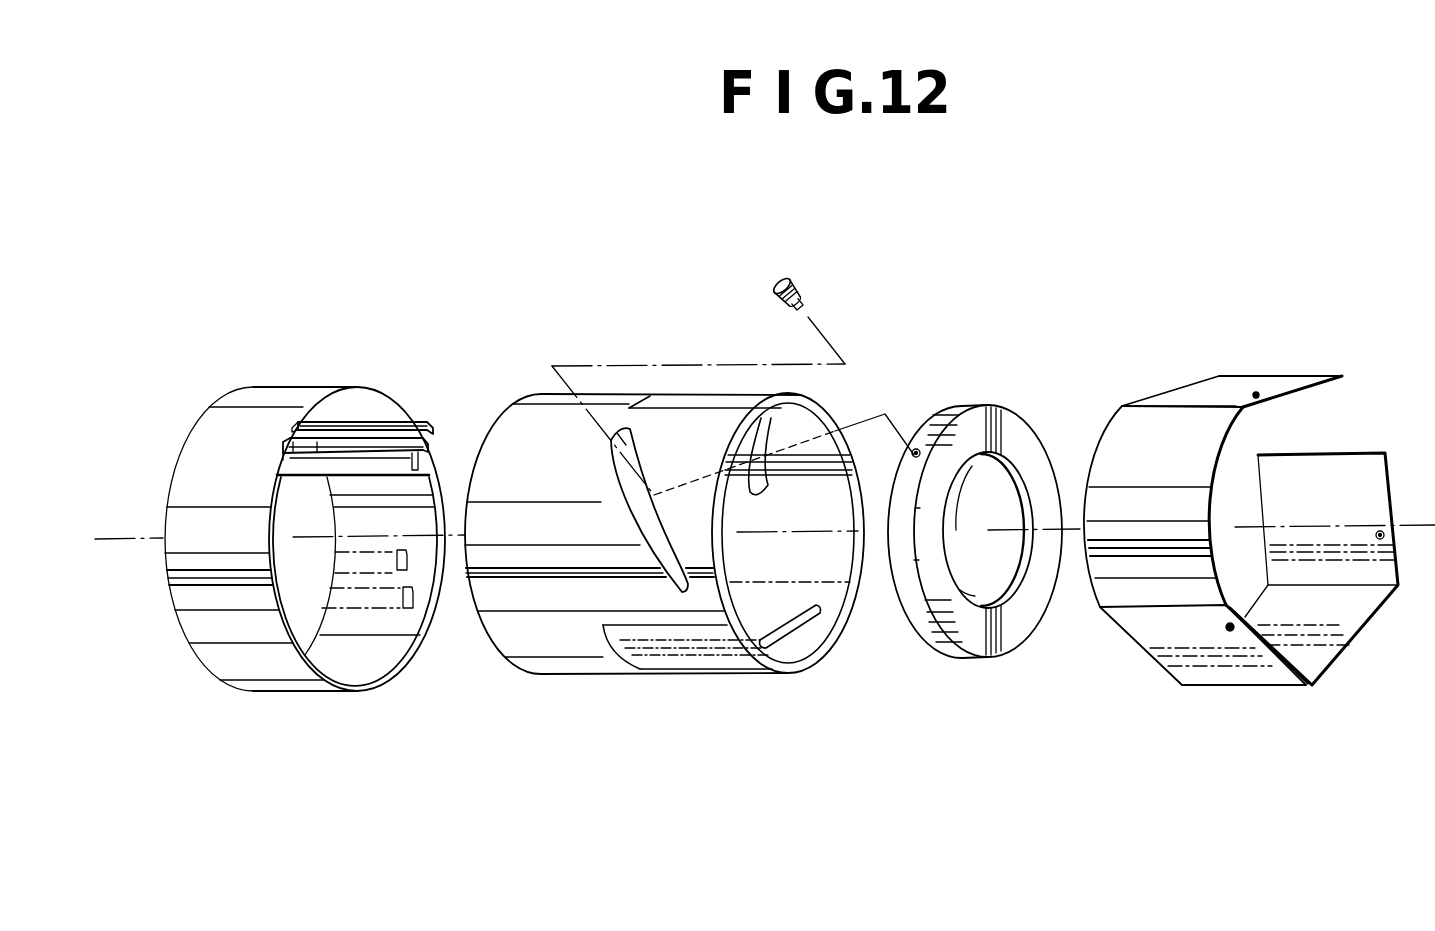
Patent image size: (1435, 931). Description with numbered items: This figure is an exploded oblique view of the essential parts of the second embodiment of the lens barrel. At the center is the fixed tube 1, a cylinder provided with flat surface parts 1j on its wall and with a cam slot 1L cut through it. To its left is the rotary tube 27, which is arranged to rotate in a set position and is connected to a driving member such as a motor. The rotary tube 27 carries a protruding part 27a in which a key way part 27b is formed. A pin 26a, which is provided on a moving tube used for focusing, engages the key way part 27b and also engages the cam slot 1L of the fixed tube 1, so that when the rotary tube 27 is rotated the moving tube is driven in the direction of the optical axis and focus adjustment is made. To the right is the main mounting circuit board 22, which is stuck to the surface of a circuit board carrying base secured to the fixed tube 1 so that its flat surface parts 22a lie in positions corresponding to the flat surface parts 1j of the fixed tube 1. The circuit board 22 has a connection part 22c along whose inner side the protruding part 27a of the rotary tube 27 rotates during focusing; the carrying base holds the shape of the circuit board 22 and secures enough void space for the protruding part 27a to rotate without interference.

The fixed tube 1 is at (545, 634).
The cam slot 1L is at (612, 474).
The flat surface parts 1j is at (698, 403).
The rotary tube 27 is at (280, 655).
The protruding part 27a is at (424, 416).
The key way part 27b is at (361, 442).
The pin 26a is at (803, 282).
The main mounting circuit board 22 is at (1349, 475).
The flat surface parts 22a is at (1189, 395).
The connection part 22c is at (1133, 568).